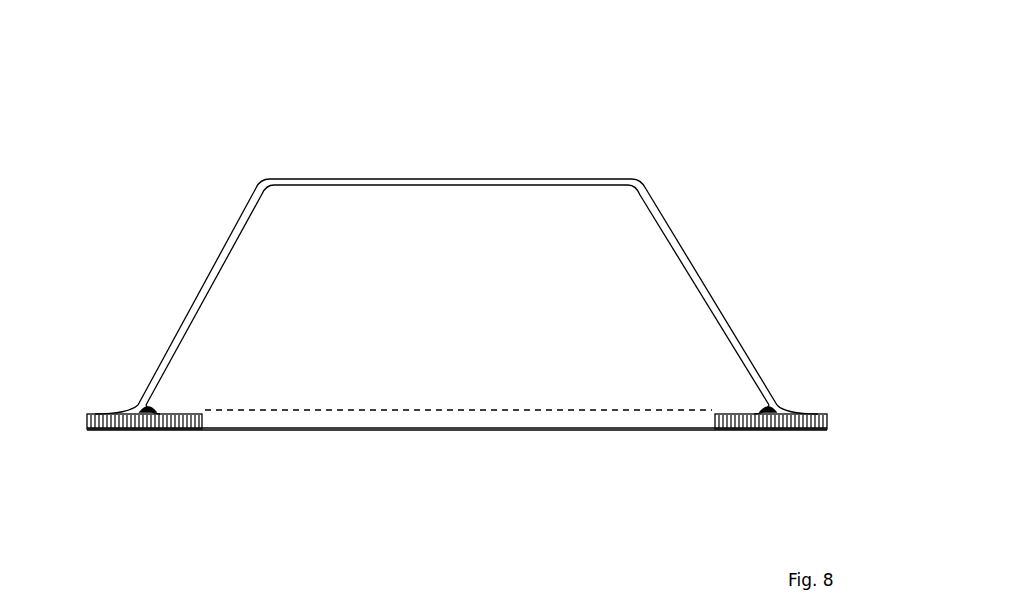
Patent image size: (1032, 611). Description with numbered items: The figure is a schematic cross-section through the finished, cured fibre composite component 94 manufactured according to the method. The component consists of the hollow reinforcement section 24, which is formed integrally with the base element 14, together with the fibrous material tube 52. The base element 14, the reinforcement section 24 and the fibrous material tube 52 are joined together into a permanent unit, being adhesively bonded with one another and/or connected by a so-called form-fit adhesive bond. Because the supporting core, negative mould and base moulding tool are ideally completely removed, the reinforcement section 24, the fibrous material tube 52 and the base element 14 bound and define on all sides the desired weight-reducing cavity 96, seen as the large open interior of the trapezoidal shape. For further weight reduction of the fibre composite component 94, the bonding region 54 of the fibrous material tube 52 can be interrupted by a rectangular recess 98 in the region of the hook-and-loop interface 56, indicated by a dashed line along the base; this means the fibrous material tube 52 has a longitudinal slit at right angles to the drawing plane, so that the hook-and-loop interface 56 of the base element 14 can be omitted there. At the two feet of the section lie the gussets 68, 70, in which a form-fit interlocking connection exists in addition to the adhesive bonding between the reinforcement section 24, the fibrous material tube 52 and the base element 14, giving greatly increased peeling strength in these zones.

The fibre composite component 94 is at (670, 146).
The fibrous material tube 52 is at (532, 179).
The reinforcement section 24 is at (236, 228).
The cavity 96 is at (440, 312).
The bonding region 54 is at (150, 386).
The hook-and-loop interface 56 is at (750, 390).
The gusset 68 is at (135, 430).
The base element 14 is at (184, 430).
The recess 98 is at (505, 430).
The gusset 70 is at (782, 430).